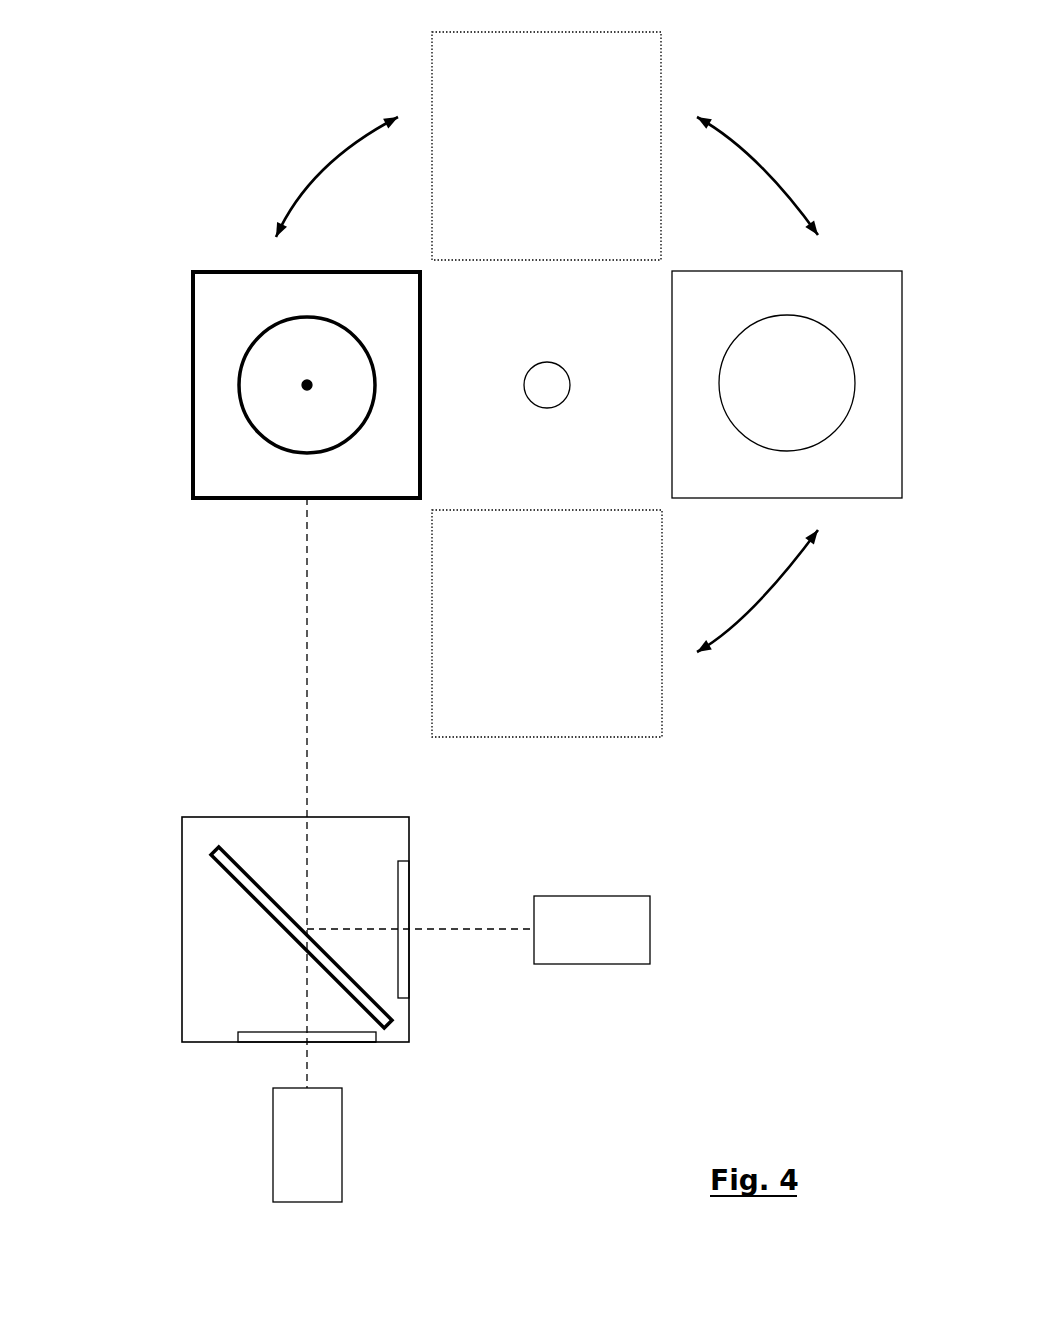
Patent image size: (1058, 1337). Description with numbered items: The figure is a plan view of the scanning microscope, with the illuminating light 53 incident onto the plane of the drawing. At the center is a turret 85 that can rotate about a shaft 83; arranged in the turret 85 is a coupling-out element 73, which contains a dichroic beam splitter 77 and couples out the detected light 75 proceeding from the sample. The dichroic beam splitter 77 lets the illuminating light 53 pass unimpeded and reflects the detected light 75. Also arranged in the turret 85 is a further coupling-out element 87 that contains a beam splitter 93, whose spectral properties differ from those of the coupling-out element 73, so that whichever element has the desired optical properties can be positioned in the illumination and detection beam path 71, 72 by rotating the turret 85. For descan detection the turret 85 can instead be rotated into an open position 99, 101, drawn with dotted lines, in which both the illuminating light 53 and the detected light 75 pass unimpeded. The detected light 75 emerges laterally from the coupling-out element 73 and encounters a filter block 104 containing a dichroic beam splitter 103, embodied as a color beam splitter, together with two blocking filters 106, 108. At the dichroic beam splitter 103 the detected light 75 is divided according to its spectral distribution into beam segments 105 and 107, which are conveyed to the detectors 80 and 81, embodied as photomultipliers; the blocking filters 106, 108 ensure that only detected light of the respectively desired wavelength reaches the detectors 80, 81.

The open position 101 is at (625, 77).
The open position 99 is at (637, 702).
The turret 85 is at (815, 111).
The coupling-out element 73 is at (217, 305).
The dichroic beam splitter 77 is at (330, 342).
The illuminating light 53 is at (179, 406).
The illumination beam path 71 is at (179, 406).
The detection beam path 72 is at (307, 385).
The further coupling-out element 87 is at (832, 280).
The beam splitter 93 is at (822, 350).
The shaft 83 is at (547, 373).
The detected light 75 is at (307, 702).
The beam segment 105 is at (470, 928).
The filter block 104 is at (195, 987).
The dichroic beam splitter 103 is at (237, 873).
The blocking filter 106 is at (403, 975).
The beam segment 107 is at (305, 1068).
The blocking filter 108 is at (365, 1043).
The detector 81 is at (615, 918).
The detector 80 is at (318, 1123).